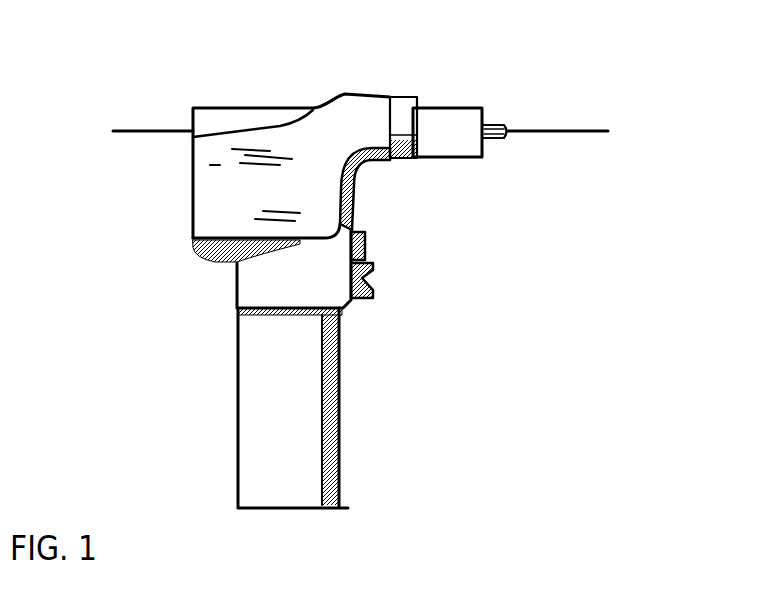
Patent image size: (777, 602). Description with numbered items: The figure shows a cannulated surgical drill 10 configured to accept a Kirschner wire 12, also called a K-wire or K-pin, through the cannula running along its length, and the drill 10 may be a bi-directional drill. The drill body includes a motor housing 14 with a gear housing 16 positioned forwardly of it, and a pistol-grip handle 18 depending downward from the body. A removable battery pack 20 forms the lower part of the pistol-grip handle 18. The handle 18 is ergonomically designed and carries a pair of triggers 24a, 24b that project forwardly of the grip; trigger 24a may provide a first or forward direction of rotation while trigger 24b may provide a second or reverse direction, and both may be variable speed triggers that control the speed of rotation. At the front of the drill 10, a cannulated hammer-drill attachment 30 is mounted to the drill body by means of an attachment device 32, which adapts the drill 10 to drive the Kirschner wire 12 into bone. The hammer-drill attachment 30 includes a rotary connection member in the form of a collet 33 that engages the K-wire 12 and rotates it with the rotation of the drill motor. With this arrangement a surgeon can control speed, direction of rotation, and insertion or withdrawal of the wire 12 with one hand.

The surgical drill 10 is at (168, 78).
The Kirschner wire 12 is at (122, 133).
The motor housing 14 is at (213, 183).
The gear housing 16 is at (340, 143).
The pistol-grip handle 18 is at (270, 283).
The removable battery pack 20 is at (253, 387).
The trigger 24a is at (365, 237).
The trigger 24b is at (370, 282).
The cannulated hammer-drill attachment 30 is at (443, 122).
The attachment device 32 is at (397, 102).
The collet 33 is at (503, 123).